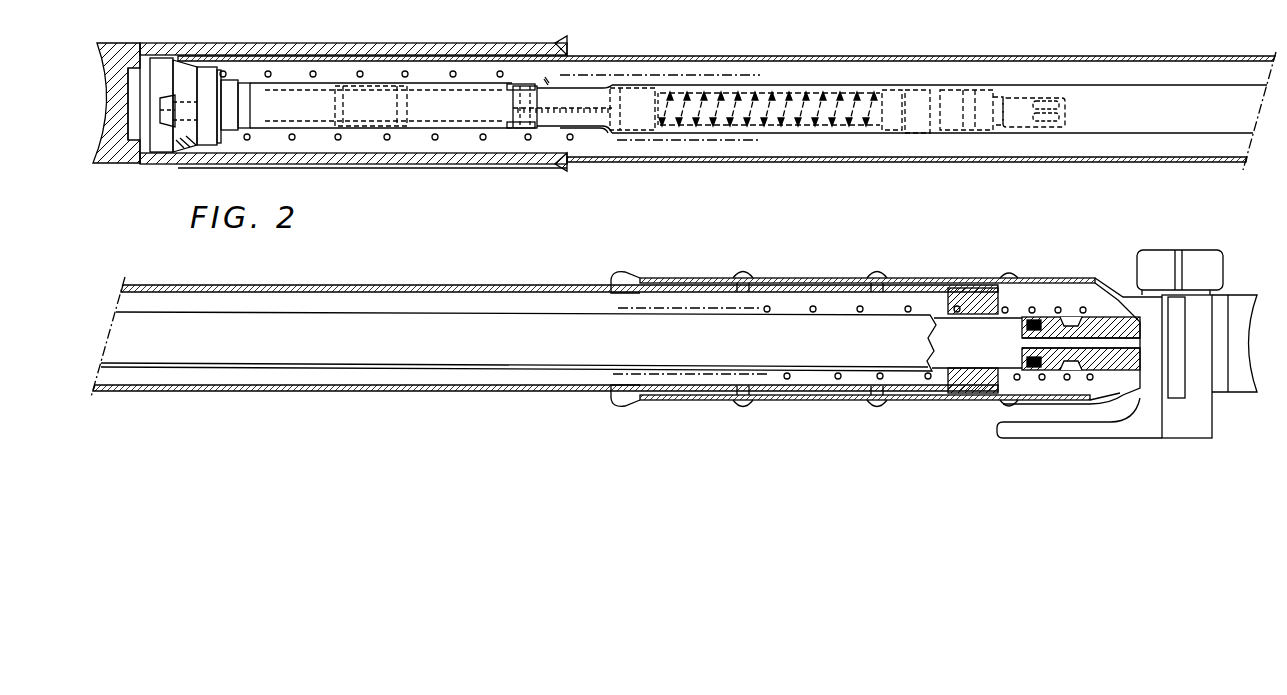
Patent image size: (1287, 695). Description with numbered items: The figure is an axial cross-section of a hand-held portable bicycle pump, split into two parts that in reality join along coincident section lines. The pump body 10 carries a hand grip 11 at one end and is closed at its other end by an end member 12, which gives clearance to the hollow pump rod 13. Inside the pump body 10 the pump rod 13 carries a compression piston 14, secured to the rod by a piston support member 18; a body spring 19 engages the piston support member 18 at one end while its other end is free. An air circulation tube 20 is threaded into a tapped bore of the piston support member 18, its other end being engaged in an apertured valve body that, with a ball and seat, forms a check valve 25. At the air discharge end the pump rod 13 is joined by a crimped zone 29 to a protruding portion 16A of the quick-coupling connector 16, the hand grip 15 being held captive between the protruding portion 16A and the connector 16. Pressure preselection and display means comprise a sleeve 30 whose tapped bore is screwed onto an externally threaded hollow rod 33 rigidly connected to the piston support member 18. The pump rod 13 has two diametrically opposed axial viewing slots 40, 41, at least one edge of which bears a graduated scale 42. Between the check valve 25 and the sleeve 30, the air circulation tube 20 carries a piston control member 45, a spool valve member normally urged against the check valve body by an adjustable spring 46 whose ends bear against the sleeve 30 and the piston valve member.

The pump body 10 is at (600, 53).
The hand grip 11 is at (485, 44).
The end member 12 is at (991, 297).
The pump rod 13 is at (717, 81).
The compression piston 14 is at (193, 68).
The hand grip 15 is at (696, 275).
The quick-coupling connector 16 is at (1150, 306).
The protruding portion 16A is at (1053, 320).
The piston support member 18 is at (300, 71).
The body spring 19 is at (361, 71).
The air circulation tube 20 is at (769, 94).
The check valve 25 is at (1055, 94).
The crimped zone 29 is at (1074, 318).
The sleeve 30 is at (594, 132).
The hollow rod 33 is at (397, 80).
The viewing slot 40 is at (605, 87).
The viewing slot 41 is at (604, 136).
The graduated scale 42 is at (550, 115).
The piston control member 45 is at (983, 90).
The adjustable spring 46 is at (724, 126).